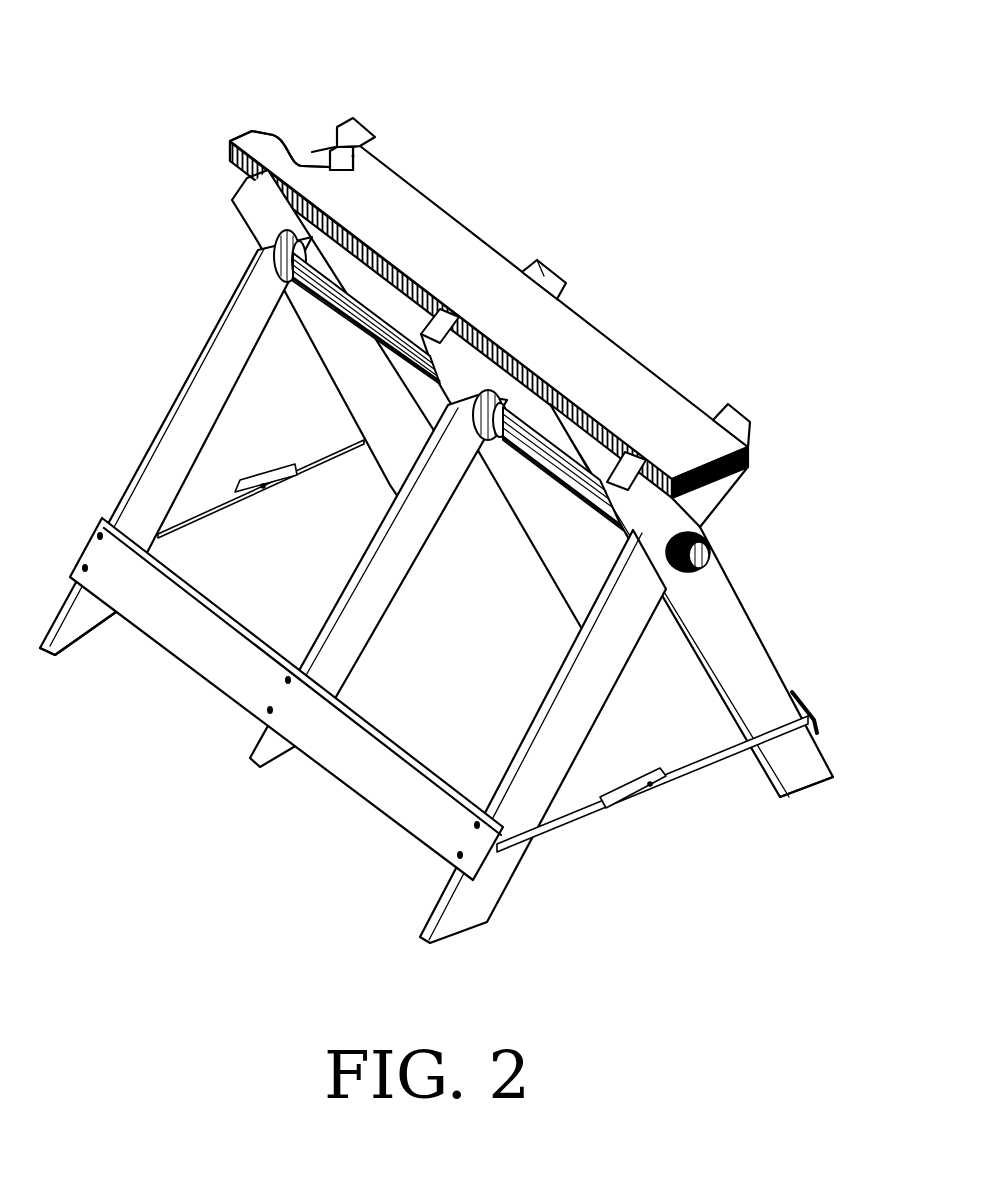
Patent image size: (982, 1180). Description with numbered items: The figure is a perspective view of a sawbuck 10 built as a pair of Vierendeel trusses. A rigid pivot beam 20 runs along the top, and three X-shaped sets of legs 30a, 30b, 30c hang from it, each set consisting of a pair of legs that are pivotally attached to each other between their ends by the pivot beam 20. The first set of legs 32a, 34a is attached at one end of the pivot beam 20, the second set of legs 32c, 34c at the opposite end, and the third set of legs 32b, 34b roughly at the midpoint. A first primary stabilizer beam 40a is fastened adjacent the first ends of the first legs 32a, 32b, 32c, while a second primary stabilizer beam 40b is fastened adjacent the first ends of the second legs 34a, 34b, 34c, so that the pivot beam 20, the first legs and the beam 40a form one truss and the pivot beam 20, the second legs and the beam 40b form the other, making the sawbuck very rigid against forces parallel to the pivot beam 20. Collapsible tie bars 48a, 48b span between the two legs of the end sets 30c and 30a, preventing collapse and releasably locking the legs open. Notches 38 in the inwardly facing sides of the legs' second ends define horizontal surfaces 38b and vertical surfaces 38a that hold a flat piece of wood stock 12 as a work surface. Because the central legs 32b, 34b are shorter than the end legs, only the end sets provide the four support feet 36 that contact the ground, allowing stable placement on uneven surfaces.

The sawbuck 10 is at (468, 483).
The wood stock 12 is at (658, 413).
The pivot beam 20 is at (552, 425).
The X-shaped set of legs 30a is at (636, 673).
The X-shaped set of legs 30b is at (425, 538).
The X-shaped set of legs 30c is at (243, 412).
The first leg 32a is at (523, 743).
The first leg 32b is at (362, 572).
The first leg 32c is at (220, 362).
The second leg 34a is at (745, 606).
The second leg 34b is at (566, 600).
The second leg 34c is at (303, 303).
The support feet 36 is at (64, 655).
The notches 38 is at (300, 112).
The vertical surface 38a is at (322, 128).
The horizontal surface 38b is at (302, 140).
The first primary stabilizer beam 40a is at (426, 800).
The second primary stabilizer beam 40b is at (793, 714).
The collapsible tie bar 48a is at (284, 482).
The collapsible tie bar 48b is at (607, 800).